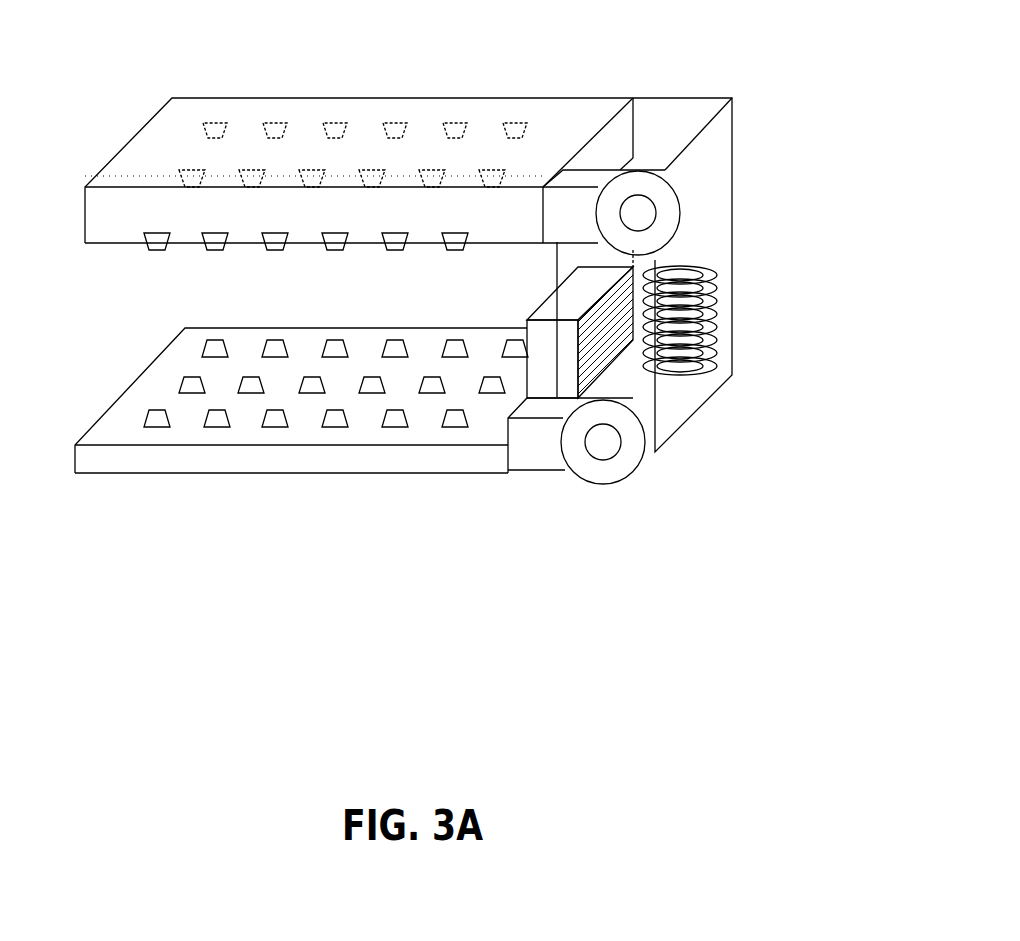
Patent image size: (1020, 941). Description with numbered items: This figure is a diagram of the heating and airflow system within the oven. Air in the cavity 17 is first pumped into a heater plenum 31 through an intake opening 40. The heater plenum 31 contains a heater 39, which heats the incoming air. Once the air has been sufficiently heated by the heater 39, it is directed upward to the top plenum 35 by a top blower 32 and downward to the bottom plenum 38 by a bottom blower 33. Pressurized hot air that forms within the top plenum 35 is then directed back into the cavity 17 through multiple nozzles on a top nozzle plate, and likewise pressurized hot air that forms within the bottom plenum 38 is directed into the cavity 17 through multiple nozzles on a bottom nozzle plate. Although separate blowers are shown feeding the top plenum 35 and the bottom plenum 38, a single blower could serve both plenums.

The cavity 17 is at (338, 305).
The heater plenum 31 is at (732, 235).
The top blower 32 is at (680, 212).
The bottom blower 33 is at (662, 445).
The top plenum 35 is at (488, 98).
The bottom plenum 38 is at (373, 473).
The heater 39 is at (713, 327).
The intake opening 40 is at (568, 310).